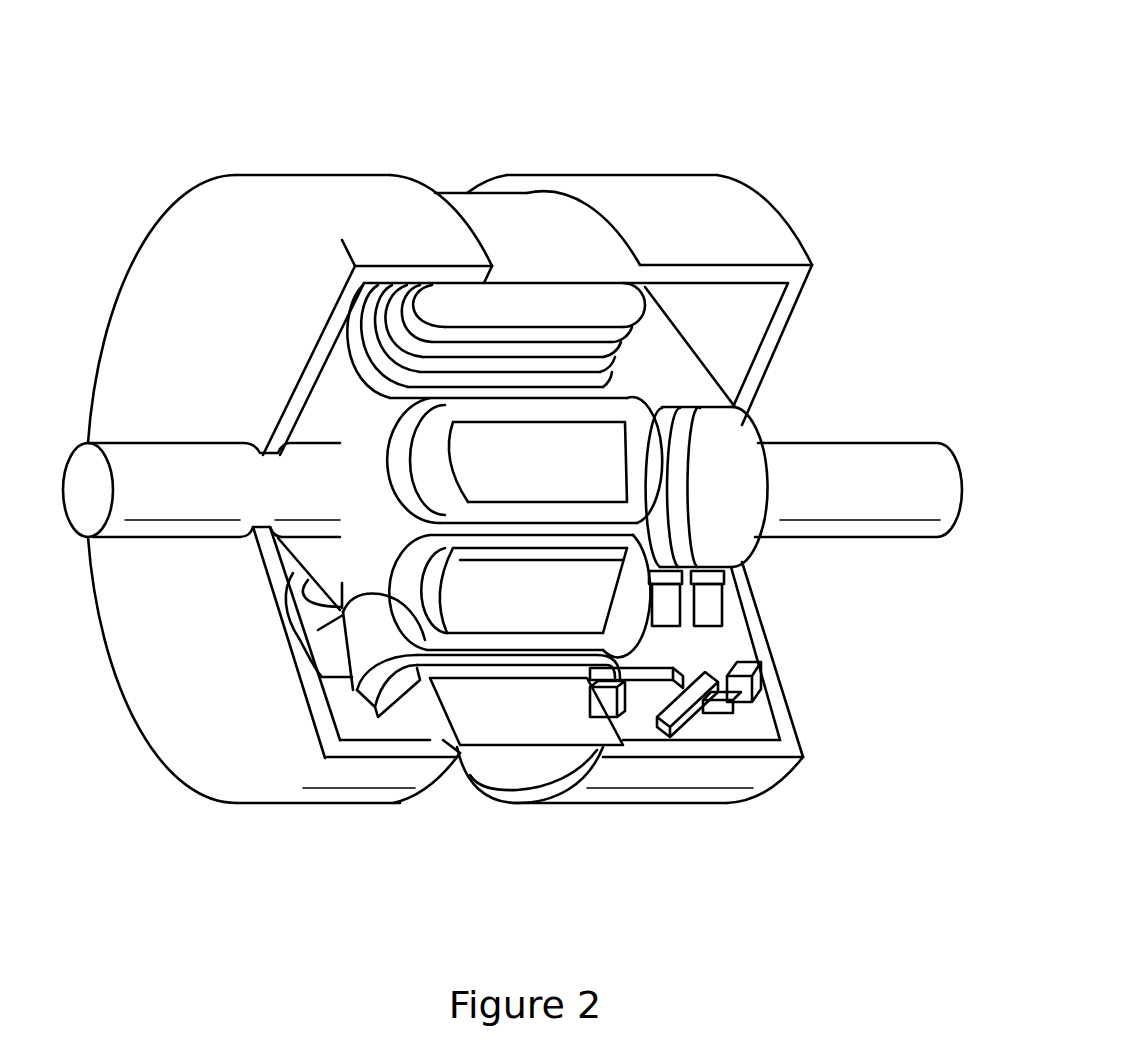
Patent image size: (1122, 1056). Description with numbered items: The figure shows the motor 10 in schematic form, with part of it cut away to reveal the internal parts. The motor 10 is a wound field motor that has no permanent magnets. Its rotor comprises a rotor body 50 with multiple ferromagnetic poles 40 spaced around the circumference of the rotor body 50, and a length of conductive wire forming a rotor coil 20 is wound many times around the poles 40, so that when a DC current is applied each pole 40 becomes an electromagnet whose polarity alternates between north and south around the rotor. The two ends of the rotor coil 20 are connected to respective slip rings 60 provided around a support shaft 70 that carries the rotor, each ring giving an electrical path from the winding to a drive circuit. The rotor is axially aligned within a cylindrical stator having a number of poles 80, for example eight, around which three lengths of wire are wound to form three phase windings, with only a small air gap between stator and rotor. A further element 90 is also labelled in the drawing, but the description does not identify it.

The motor 10 is at (503, 463).
The rotor coil 20 is at (427, 472).
The ferromagnetic poles 40 is at (590, 447).
The rotor body 50 is at (313, 368).
The slip rings 60 is at (698, 520).
The support shaft 70 is at (882, 443).
The stator poles 80 is at (450, 693).
The bracket 90 is at (373, 680).